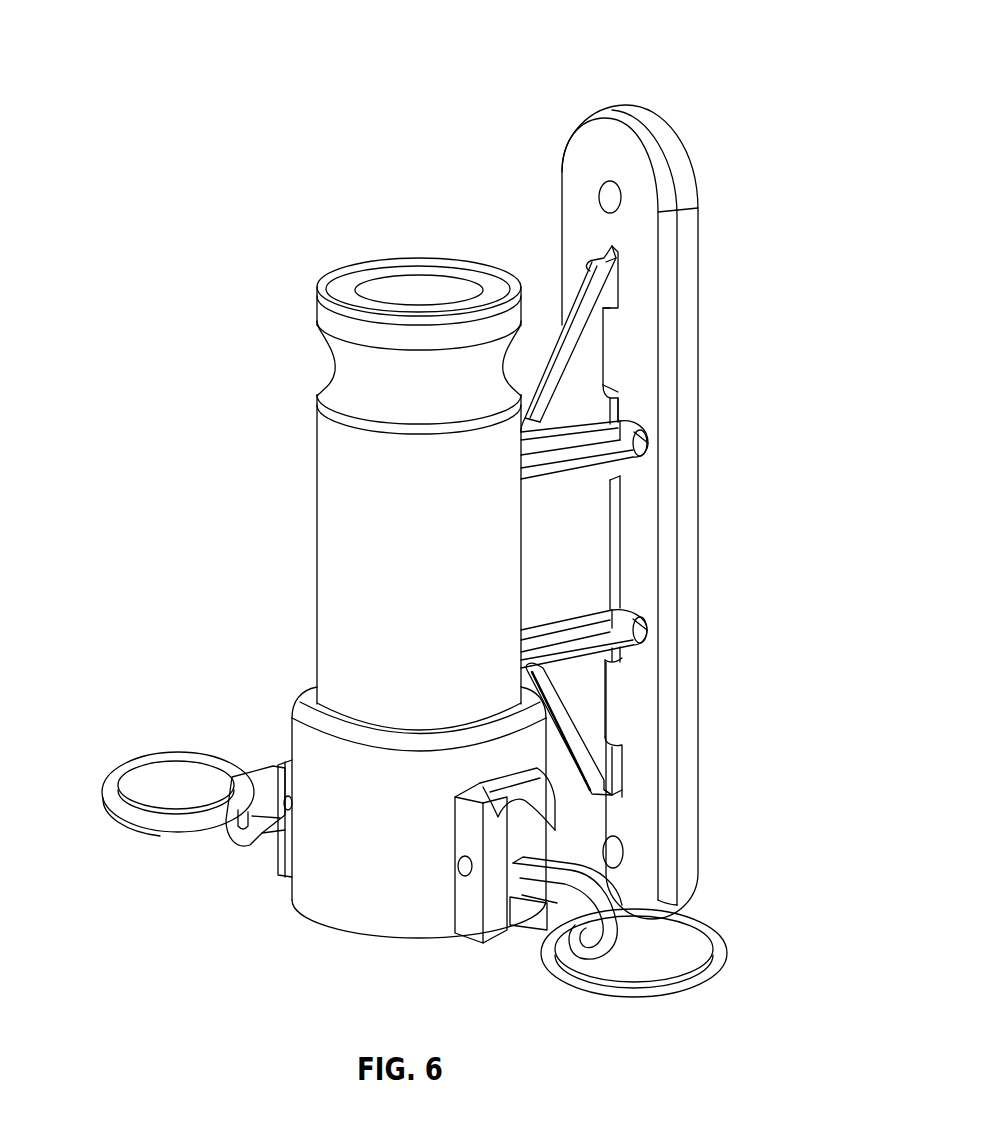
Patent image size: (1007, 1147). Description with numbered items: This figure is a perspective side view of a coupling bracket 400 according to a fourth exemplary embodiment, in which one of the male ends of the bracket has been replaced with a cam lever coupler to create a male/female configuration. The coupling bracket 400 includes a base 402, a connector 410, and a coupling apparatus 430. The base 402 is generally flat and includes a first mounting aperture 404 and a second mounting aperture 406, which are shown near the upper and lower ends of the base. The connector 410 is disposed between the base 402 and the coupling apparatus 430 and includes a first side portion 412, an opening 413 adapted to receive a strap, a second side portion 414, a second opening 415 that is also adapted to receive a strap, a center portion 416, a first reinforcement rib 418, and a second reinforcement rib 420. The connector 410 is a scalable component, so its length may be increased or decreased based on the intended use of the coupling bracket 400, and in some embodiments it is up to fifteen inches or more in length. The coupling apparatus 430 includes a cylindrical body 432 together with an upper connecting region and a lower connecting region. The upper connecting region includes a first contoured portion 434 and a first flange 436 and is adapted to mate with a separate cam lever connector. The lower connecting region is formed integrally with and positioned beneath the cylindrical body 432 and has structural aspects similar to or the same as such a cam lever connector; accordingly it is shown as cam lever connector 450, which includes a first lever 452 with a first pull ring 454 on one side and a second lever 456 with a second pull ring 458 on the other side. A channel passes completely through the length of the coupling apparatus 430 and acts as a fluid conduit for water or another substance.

The coupling bracket 400 is at (394, 82).
The base 402 is at (645, 107).
The first mounting aperture 404 is at (607, 183).
The second mounting aperture 406 is at (615, 847).
The connector 410 is at (546, 283).
The first side portion 412 is at (583, 703).
The opening 413 is at (612, 328).
The second side portion 414 is at (585, 377).
The opening 415 is at (610, 693).
The center portion 416 is at (584, 537).
The first reinforcement rib 418 is at (630, 424).
The second reinforcement rib 420 is at (640, 624).
The coupling apparatus 430 is at (296, 567).
The cylindrical body 432 is at (436, 567).
The first contoured portion 434 is at (353, 374).
The first flange 436 is at (378, 268).
The cam lever connector 450 is at (394, 842).
The first lever 452 is at (257, 843).
The first pull ring 454 is at (180, 753).
The second lever 456 is at (607, 897).
The second pull ring 458 is at (647, 997).